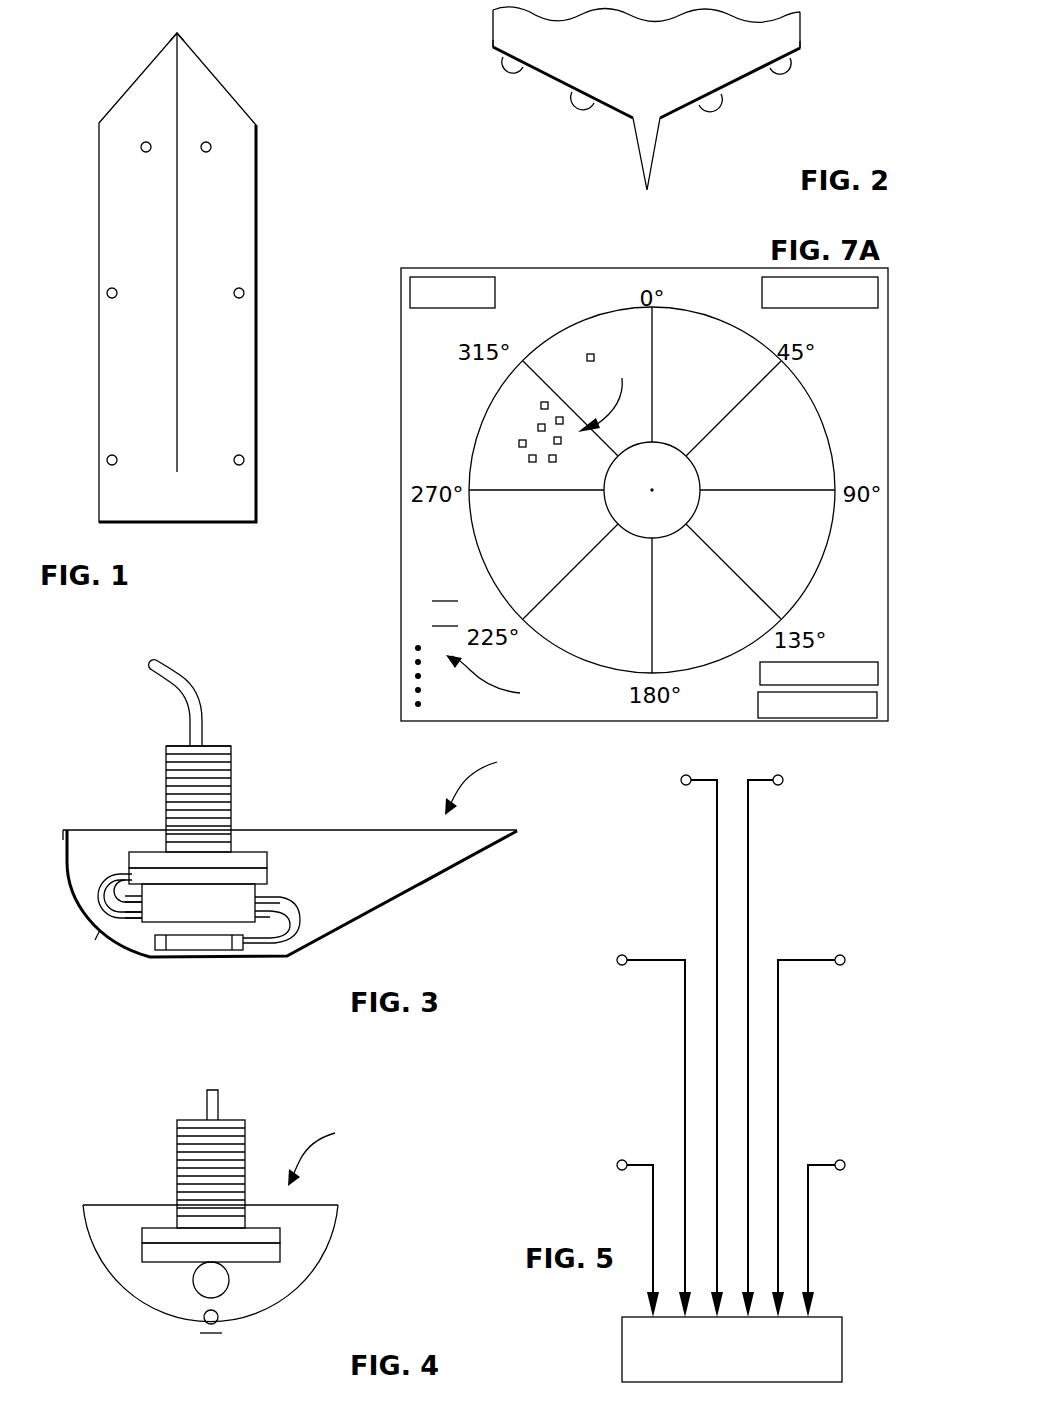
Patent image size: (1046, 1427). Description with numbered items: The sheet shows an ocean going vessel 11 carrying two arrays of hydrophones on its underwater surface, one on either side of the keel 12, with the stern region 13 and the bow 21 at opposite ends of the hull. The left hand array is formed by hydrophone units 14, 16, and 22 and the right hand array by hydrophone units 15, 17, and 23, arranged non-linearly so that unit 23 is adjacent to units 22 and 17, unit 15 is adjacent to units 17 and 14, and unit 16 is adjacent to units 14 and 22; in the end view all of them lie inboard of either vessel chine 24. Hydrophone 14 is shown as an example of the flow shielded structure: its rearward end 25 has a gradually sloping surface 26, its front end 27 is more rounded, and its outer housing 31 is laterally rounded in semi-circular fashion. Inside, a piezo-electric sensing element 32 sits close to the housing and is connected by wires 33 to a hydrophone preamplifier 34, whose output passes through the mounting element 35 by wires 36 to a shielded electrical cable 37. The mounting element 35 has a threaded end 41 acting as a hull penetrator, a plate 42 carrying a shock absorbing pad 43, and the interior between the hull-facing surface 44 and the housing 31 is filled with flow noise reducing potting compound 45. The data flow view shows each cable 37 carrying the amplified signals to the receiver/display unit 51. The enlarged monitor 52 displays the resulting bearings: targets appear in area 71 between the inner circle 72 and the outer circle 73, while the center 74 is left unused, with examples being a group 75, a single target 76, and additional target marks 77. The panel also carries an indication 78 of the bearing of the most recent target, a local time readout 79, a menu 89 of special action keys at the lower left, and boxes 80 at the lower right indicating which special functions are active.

In FIG. 1, the ocean going vessel 11 is at (99, 222).
In FIG. 2, the ocean going vessel 11 is at (493, 25).
In FIG. 1, the keel 12 is at (177, 243).
In FIG. 2, the keel 12 is at (647, 180).
In FIG. 1, the stern 13 is at (220, 522).
In FIG. 1, the hydrophone unit 14 is at (107, 460).
In FIG. 2, the hydrophone unit 14 is at (508, 72).
In FIG. 3, the hydrophone unit 14 is at (485, 783).
In FIG. 4, the hydrophone unit 14 is at (324, 1156).
In FIG. 5, the hydrophone unit 14 is at (620, 1160).
In FIG. 1, the hydrophone unit 15 is at (244, 460).
In FIG. 2, the hydrophone unit 15 is at (786, 72).
In FIG. 5, the hydrophone unit 15 is at (840, 1160).
In FIG. 1, the hydrophone unit 16 is at (107, 293).
In FIG. 5, the hydrophone unit 16 is at (620, 955).
In FIG. 1, the hydrophone unit 17 is at (244, 293).
In FIG. 5, the hydrophone unit 17 is at (840, 955).
In FIG. 1, the bow 21 is at (177, 33).
In FIG. 1, the hydrophone unit 22 is at (141, 147).
In FIG. 2, the hydrophone unit 22 is at (578, 108).
In FIG. 5, the hydrophone unit 22 is at (681, 780).
In FIG. 1, the hydrophone unit 23 is at (211, 147).
In FIG. 2, the hydrophone unit 23 is at (718, 108).
In FIG. 5, the hydrophone unit 23 is at (783, 780).
In FIG. 2, the vessel chine 24 is at (495, 50).
In FIG. 3, the rearward end 25 is at (512, 838).
In FIG. 3, the gradually sloping surface 26 is at (457, 865).
In FIG. 3, the front end 27 is at (85, 934).
In FIG. 3, the outer housing 31 is at (188, 950).
In FIG. 4, the outer housing 31 is at (228, 1333).
In FIG. 3, the piezo-electric sensing element 32 is at (220, 945).
In FIG. 4, the piezo-electric sensing element 32 is at (205, 1322).
In FIG. 3, the wires 33 is at (285, 913).
In FIG. 3, the hydrophone preamplifier 34 is at (150, 922).
In FIG. 4, the hydrophone preamplifier 34 is at (225, 1292).
In FIG. 3, the mounting element 35 is at (166, 758).
In FIG. 4, the mounting element 35 is at (177, 1125).
In FIG. 3, the wires 36 is at (132, 876).
In FIG. 3, the shielded electrical cable 37 is at (186, 668).
In FIG. 4, the shielded electrical cable 37 is at (218, 1095).
In FIG. 5, the shielded electrical cable 37 is at (748, 826).
In FIG. 3, the threaded end 41 is at (218, 746).
In FIG. 3, the plate 42 is at (267, 858).
In FIG. 4, the plate 42 is at (280, 1235).
In FIG. 3, the shock absorbing pad 43 is at (267, 878).
In FIG. 4, the shock absorbing pad 43 is at (142, 1258).
In FIG. 3, the surface 44 is at (372, 830).
In FIG. 4, the surface 44 is at (118, 1205).
In FIG. 3, the flow noise reducing potting compound 45 is at (112, 937).
In FIG. 4, the flow noise reducing potting compound 45 is at (100, 1262).
In FIG. 5, the receiver/display unit 51 is at (622, 1355).
In FIG. 7A, the microcomputer monitor 52 is at (410, 382).
In FIG. 7A, the area 71 is at (706, 330).
In FIG. 7A, the inner circle 72 is at (700, 474).
In FIG. 7A, the outer circle 73 is at (478, 551).
In FIG. 7A, the center 74 is at (668, 521).
In FIG. 7A, the group 75 is at (609, 389).
In FIG. 7A, the single target 76 is at (590, 354).
In FIG. 7A, the target markers 77 is at (541, 432).
In FIG. 7A, the indication 78 is at (427, 277).
In FIG. 7A, the local time readout 79 is at (870, 308).
In FIG. 7A, the boxes 80 is at (868, 662).
In FIG. 7A, the menu 89 is at (479, 649).